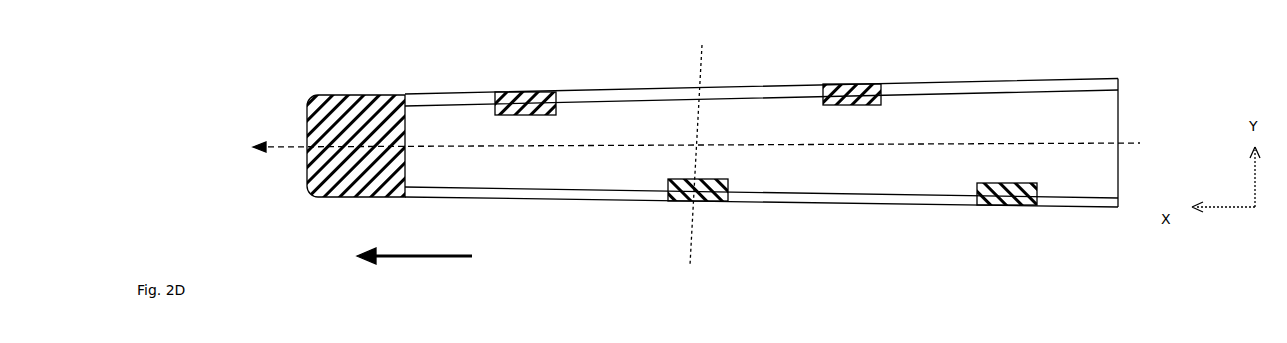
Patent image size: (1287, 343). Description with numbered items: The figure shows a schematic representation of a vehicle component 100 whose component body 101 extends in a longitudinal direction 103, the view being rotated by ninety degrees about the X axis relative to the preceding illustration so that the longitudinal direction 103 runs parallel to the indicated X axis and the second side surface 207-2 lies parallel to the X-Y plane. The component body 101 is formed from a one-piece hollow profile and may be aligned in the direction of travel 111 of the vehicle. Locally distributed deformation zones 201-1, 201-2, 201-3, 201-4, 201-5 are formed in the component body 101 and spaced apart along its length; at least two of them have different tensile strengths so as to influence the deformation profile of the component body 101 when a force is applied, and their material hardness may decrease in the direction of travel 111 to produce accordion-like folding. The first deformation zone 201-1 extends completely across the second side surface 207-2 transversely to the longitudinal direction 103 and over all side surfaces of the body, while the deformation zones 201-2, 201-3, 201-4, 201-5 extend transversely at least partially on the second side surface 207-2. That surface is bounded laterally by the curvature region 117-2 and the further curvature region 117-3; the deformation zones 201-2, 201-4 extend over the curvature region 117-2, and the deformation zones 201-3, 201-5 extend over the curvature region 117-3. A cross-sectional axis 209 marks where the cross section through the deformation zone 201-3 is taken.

The vehicle component 100 is at (375, 56).
The component body 101 is at (636, 120).
The longitudinal direction 103 is at (714, 147).
The direction of travel 111 is at (414, 247).
The curvature region 117-2 is at (940, 82).
The further curvature region 117-3 is at (1060, 205).
The first deformation zone 201-1 is at (315, 100).
The deformation zone 201-2 is at (512, 92).
The deformation zone 201-3 is at (668, 195).
The deformation zone 201-4 is at (850, 95).
The deformation zone 201-5 is at (990, 200).
The second side surface 207-2 is at (862, 177).
The cross-sectional axis 209 is at (681, 152).